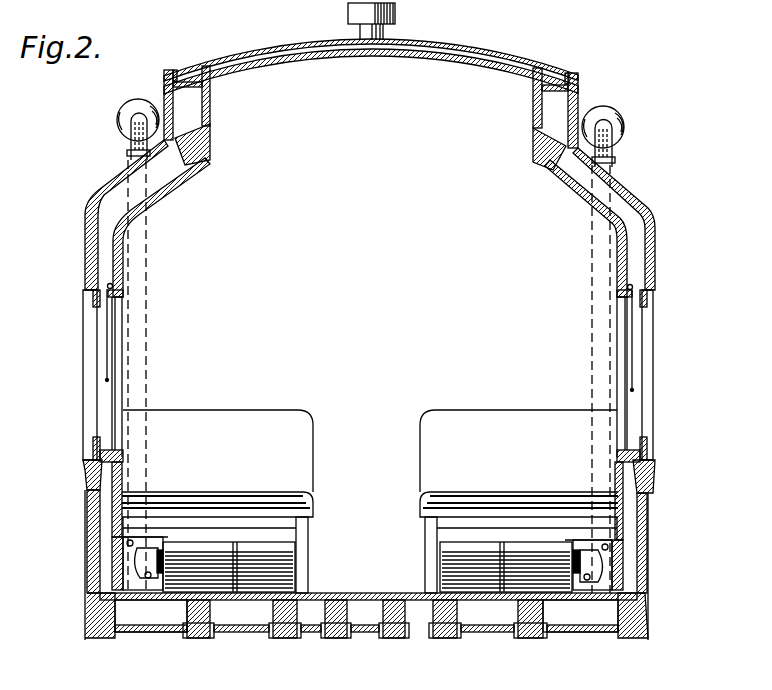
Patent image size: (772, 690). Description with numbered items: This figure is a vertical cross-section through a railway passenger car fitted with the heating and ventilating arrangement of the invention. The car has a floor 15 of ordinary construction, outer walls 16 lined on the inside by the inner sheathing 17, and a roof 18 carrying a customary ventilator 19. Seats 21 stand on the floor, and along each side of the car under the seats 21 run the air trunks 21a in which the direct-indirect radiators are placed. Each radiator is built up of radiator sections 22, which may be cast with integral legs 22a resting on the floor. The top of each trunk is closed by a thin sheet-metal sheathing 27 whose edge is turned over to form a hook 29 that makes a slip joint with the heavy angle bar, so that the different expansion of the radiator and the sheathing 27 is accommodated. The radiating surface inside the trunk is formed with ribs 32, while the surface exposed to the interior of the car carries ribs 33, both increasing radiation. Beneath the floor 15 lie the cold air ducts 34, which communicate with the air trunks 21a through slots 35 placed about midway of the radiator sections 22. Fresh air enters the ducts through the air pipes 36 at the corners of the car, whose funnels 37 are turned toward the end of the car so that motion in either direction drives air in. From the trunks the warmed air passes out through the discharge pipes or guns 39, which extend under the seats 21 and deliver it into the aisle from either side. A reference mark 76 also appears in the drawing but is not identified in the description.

The floor 15 is at (365, 597).
The outer walls 16 is at (87, 532).
The inner sheathing 17 is at (95, 565).
The roof 18 is at (461, 60).
The ventilator 19 is at (540, 107).
The seats 21 is at (298, 508).
The air trunks 21a is at (118, 585).
The radiator sections 22 is at (152, 540).
The integral legs 22a is at (125, 593).
The sheathing 27 is at (131, 538).
The hook 29 is at (208, 113).
The ribs 32 is at (113, 556).
The ribs 33 is at (182, 550).
The cold air ducts 34 is at (152, 608).
The slots 35 is at (123, 628).
The air pipes 36 is at (147, 232).
The funnels 37 is at (128, 108).
The discharge pipes or guns 39 is at (215, 567).
The wall bracket 76 is at (620, 543).